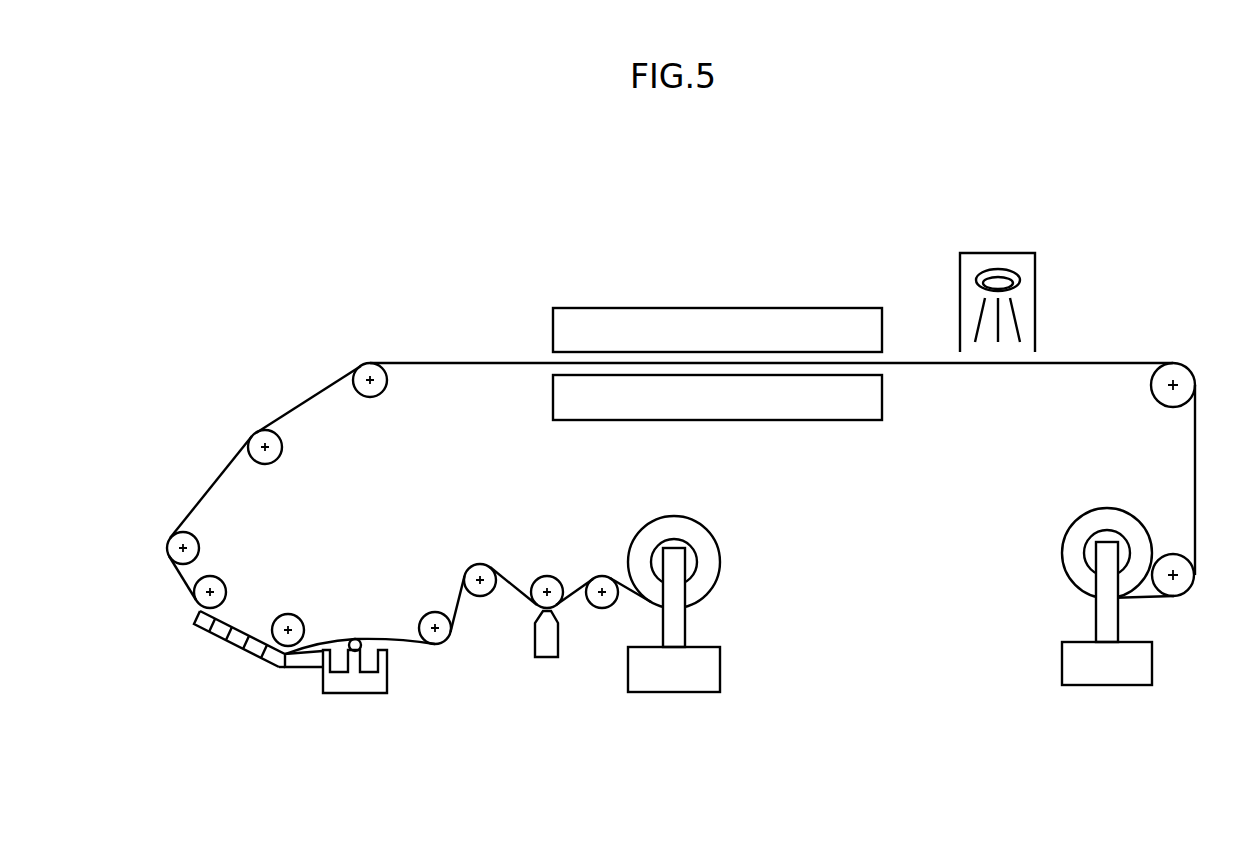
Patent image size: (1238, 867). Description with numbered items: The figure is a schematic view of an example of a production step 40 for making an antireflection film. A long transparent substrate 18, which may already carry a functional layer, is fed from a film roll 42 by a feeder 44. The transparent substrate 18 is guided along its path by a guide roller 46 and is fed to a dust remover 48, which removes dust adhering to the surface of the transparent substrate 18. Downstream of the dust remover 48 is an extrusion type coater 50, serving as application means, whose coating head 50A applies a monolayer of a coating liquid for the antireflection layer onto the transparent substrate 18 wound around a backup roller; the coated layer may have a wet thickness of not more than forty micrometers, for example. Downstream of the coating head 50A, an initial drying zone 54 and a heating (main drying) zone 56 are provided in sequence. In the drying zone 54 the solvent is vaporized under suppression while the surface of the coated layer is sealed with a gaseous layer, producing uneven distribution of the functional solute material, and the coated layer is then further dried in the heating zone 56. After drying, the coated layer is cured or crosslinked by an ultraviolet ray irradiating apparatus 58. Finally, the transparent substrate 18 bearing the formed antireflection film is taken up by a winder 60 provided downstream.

The production step 40 is at (1182, 181).
The transparent substrate 18 is at (631, 590).
The film roll 42 is at (674, 516).
The feeder 44 is at (674, 693).
The guide roller 46 is at (282, 451).
The dust remover 48 is at (547, 657).
The extrusion type coater 50 is at (355, 699).
The coating head 50A is at (357, 639).
The drying zone 54 is at (238, 653).
The heating zone 56 is at (634, 312).
The ultraviolet ray irradiating apparatus 58 is at (1037, 292).
The winder 60 is at (1107, 686).